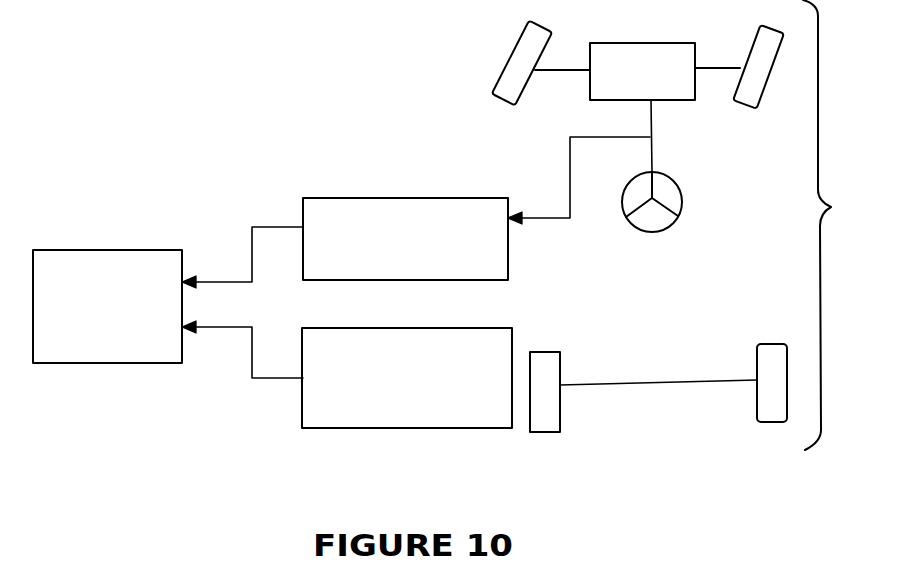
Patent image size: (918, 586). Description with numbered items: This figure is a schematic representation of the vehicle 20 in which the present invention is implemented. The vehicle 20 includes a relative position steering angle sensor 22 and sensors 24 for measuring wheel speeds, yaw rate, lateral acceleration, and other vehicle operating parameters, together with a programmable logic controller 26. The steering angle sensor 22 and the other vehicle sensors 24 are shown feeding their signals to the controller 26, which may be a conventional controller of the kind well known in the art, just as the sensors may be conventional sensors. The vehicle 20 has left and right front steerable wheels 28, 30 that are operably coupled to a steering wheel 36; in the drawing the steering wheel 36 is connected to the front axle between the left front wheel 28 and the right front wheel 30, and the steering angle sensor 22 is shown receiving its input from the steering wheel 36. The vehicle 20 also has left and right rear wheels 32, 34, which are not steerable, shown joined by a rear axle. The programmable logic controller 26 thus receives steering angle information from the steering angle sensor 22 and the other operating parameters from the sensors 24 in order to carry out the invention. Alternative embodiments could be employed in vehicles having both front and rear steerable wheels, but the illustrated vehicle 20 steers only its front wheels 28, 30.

The vehicle 20 is at (405, 61).
The relative position steering angle sensor 22 is at (372, 200).
The sensors 24 is at (302, 406).
The programmable logic controller 26 is at (110, 257).
The left front steerable wheel 28 is at (522, 35).
The right front steerable wheel 30 is at (758, 37).
The left rear wheel 32 is at (545, 352).
The right rear wheel 34 is at (771, 344).
The steering wheel 36 is at (683, 189).